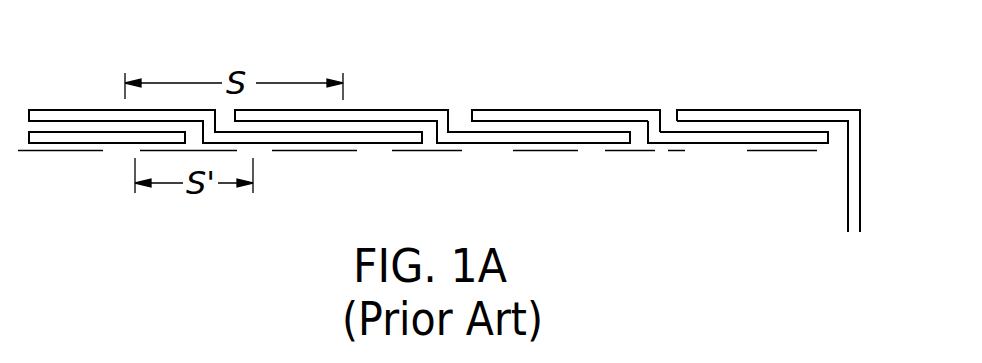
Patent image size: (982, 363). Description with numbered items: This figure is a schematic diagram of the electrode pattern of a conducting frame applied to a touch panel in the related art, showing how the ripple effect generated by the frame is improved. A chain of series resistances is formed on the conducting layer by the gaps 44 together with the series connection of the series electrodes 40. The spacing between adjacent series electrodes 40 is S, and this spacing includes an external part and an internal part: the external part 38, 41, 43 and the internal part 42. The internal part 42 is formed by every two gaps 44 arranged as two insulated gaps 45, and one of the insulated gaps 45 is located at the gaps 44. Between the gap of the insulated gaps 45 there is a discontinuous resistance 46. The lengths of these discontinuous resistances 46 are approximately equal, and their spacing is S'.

The external part 38 is at (63, 102).
The series electrode 40 is at (392, 102).
The external part 41 is at (547, 110).
The internal part 42 is at (578, 132).
The external part 43 is at (765, 110).
The gap 44 is at (448, 123).
The insulated gap 45 is at (428, 152).
The discontinuous resistance 46 is at (118, 153).